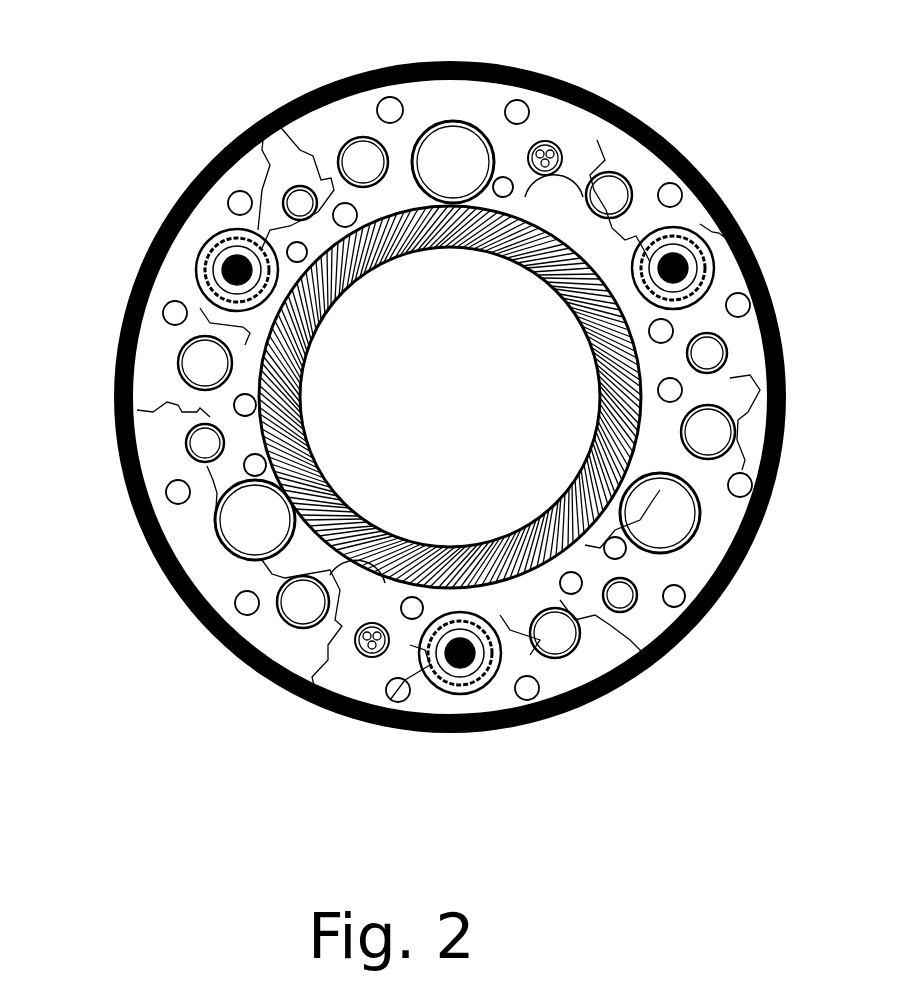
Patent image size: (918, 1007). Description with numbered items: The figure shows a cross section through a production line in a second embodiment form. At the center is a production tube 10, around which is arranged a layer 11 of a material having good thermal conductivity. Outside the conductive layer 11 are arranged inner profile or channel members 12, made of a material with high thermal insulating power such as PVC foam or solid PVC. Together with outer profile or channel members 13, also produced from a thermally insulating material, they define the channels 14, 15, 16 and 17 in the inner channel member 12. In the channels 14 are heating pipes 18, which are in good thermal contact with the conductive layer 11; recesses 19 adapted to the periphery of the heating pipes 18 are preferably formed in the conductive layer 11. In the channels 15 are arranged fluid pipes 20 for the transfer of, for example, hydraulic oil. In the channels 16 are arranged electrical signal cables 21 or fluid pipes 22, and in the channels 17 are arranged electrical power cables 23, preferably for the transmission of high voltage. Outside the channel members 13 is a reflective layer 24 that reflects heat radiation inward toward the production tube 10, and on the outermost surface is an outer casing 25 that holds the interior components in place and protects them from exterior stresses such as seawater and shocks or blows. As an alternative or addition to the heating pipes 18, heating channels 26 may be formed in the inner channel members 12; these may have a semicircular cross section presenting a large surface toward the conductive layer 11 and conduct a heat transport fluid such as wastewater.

The production tube 10 is at (476, 206).
The conductive layer 11 is at (343, 226).
The inner channel members 12 is at (638, 233).
The outer channel members 13 is at (719, 230).
The channels 14 is at (709, 546).
The channels 15 is at (760, 463).
The channels 16 is at (771, 393).
The channels 17 is at (743, 310).
The heating pipes 18 is at (423, 137).
The recesses 19 is at (659, 589).
The fluid pipes 20 is at (599, 114).
The electrical signal cables 21 is at (530, 160).
The fluid pipes 22 is at (287, 216).
The electrical power cables 23 is at (227, 246).
The reflective layer 24 is at (172, 208).
The outer casing 25 is at (778, 290).
The heating channels 26 is at (188, 320).